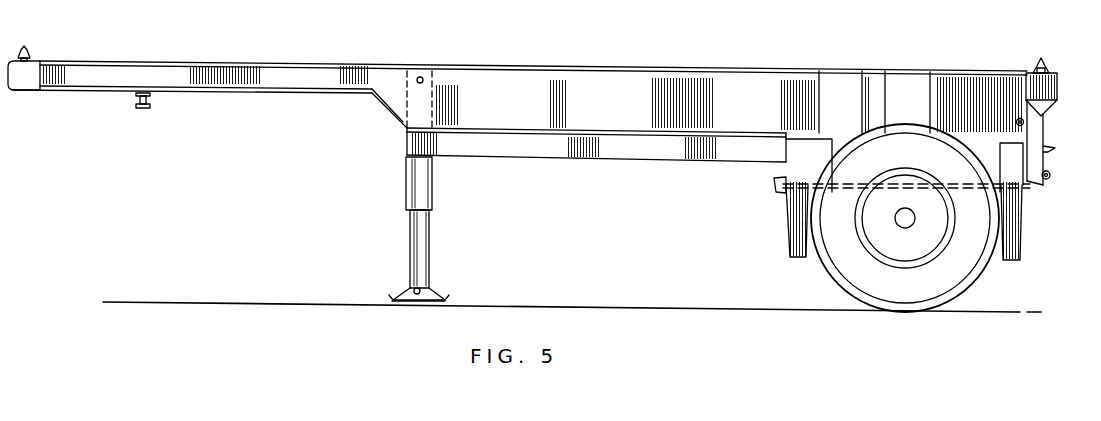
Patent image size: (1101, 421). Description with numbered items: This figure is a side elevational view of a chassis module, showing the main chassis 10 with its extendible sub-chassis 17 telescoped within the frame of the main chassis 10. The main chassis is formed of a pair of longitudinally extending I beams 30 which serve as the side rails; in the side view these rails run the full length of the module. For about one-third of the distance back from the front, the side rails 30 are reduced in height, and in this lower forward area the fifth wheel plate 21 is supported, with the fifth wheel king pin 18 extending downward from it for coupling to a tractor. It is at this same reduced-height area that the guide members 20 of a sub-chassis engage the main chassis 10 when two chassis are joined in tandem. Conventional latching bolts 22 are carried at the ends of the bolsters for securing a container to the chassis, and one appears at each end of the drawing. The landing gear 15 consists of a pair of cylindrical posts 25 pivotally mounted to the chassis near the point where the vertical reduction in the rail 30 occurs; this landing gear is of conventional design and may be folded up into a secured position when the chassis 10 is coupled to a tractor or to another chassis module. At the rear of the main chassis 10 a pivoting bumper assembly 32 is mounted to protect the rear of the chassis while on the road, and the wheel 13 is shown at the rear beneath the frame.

The chassis 10 is at (796, 70).
The wheel 13 is at (832, 278).
The landing gear 15 is at (432, 198).
The extendible sub-chassis 17 is at (647, 152).
The fifth wheel king pin 18 is at (141, 110).
The guide members 20 is at (1045, 148).
The fifth wheel plate 21 is at (178, 96).
The latching bolts 22 is at (30, 46).
The cylindrical posts 25 is at (405, 185).
The I beams 30 is at (591, 86).
The pivoting bumper assembly 32 is at (1050, 177).